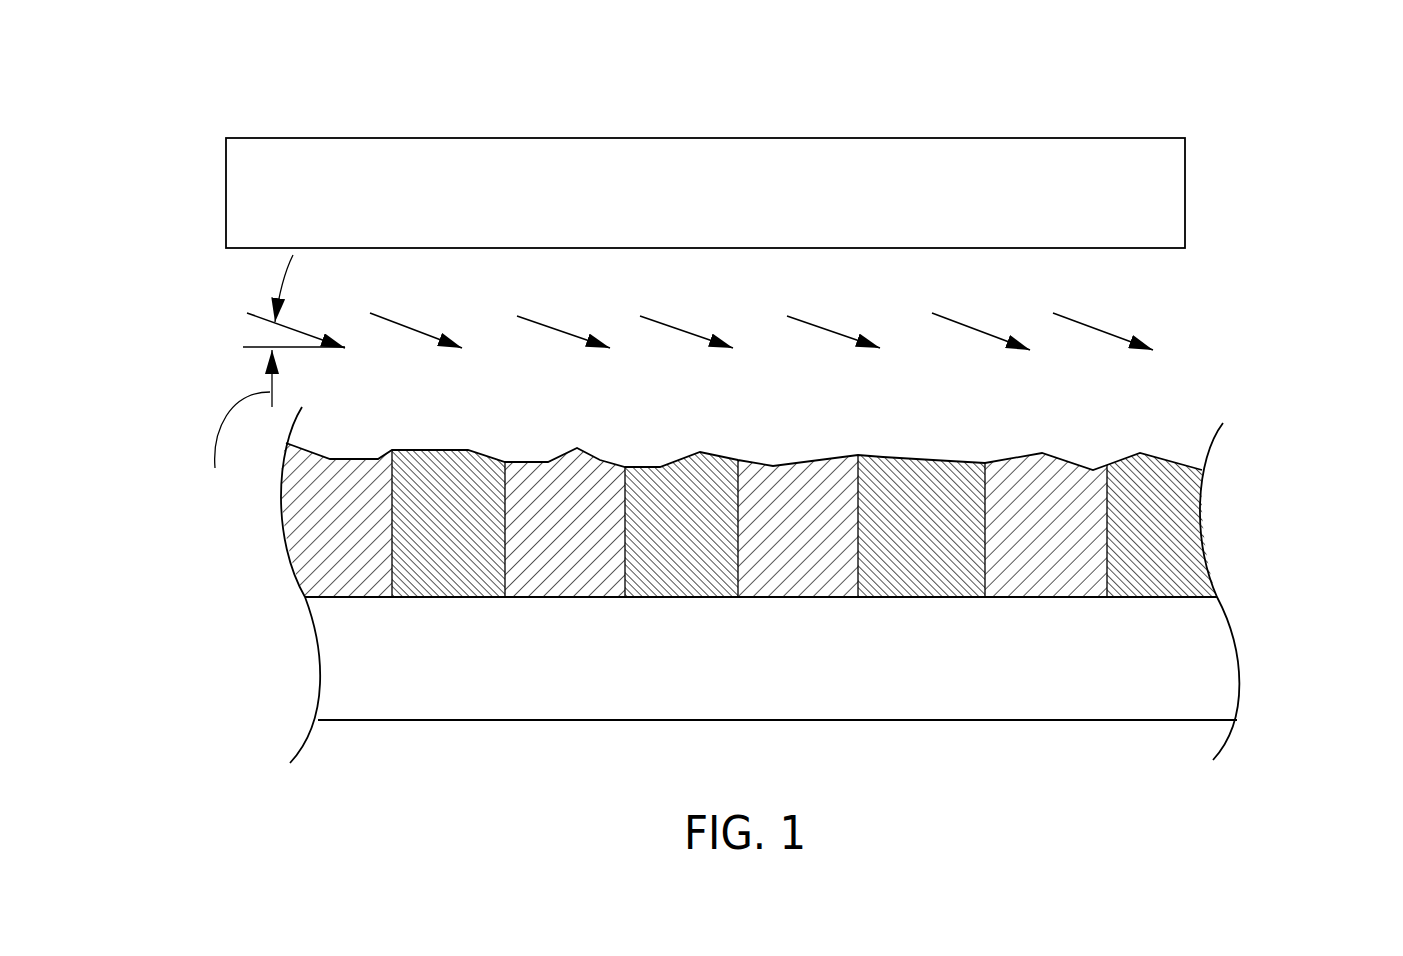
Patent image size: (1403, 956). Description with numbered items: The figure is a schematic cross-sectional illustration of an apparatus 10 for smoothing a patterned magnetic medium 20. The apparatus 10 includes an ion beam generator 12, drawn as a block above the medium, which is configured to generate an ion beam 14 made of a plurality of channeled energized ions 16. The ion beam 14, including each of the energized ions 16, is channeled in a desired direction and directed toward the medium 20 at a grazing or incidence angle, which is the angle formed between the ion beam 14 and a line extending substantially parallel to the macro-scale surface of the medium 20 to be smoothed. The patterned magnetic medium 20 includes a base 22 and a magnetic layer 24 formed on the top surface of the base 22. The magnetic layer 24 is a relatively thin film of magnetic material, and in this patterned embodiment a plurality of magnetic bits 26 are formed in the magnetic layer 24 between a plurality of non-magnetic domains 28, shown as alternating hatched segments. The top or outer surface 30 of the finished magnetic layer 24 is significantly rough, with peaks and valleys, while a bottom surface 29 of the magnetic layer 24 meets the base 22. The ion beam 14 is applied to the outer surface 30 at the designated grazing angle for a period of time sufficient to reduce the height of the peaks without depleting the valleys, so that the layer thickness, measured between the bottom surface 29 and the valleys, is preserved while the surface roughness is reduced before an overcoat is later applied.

The apparatus 10 is at (1133, 80).
The ion beam generator 12 is at (738, 137).
The ion beam 14 is at (1147, 292).
The energized ions 16 is at (258, 315).
The patterned magnetic medium 20 is at (1228, 478).
The base 22 is at (1130, 698).
The magnetic layer 24 is at (332, 568).
The magnetic bits 26 is at (460, 470).
The non-magnetic domains 28 is at (327, 470).
The bottom surface 29 is at (1015, 597).
The outer surface 30 is at (882, 455).